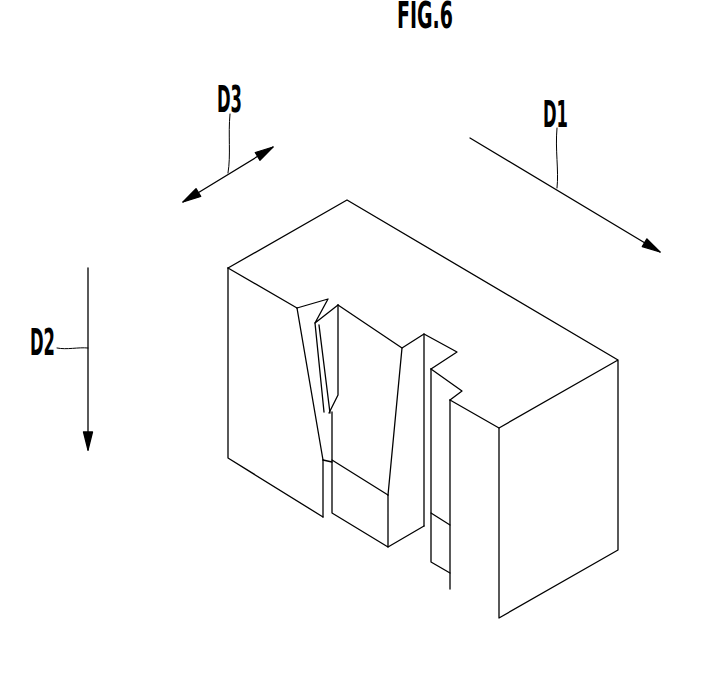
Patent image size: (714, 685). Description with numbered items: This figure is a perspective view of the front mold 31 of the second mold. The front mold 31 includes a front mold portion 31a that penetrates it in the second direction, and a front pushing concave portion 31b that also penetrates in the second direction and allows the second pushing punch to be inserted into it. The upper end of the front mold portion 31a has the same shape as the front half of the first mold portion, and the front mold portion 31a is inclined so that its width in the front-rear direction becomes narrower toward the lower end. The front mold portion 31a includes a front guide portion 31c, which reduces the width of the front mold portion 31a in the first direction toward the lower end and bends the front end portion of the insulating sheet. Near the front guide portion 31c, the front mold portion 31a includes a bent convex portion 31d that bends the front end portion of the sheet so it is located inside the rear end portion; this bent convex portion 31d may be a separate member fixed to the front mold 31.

The front mold 31 is at (387, 242).
The front mold portion 31a is at (378, 343).
The front pushing concave portion 31b is at (437, 352).
The front guide portion 31c is at (311, 320).
The bent convex portion 31d is at (330, 357).